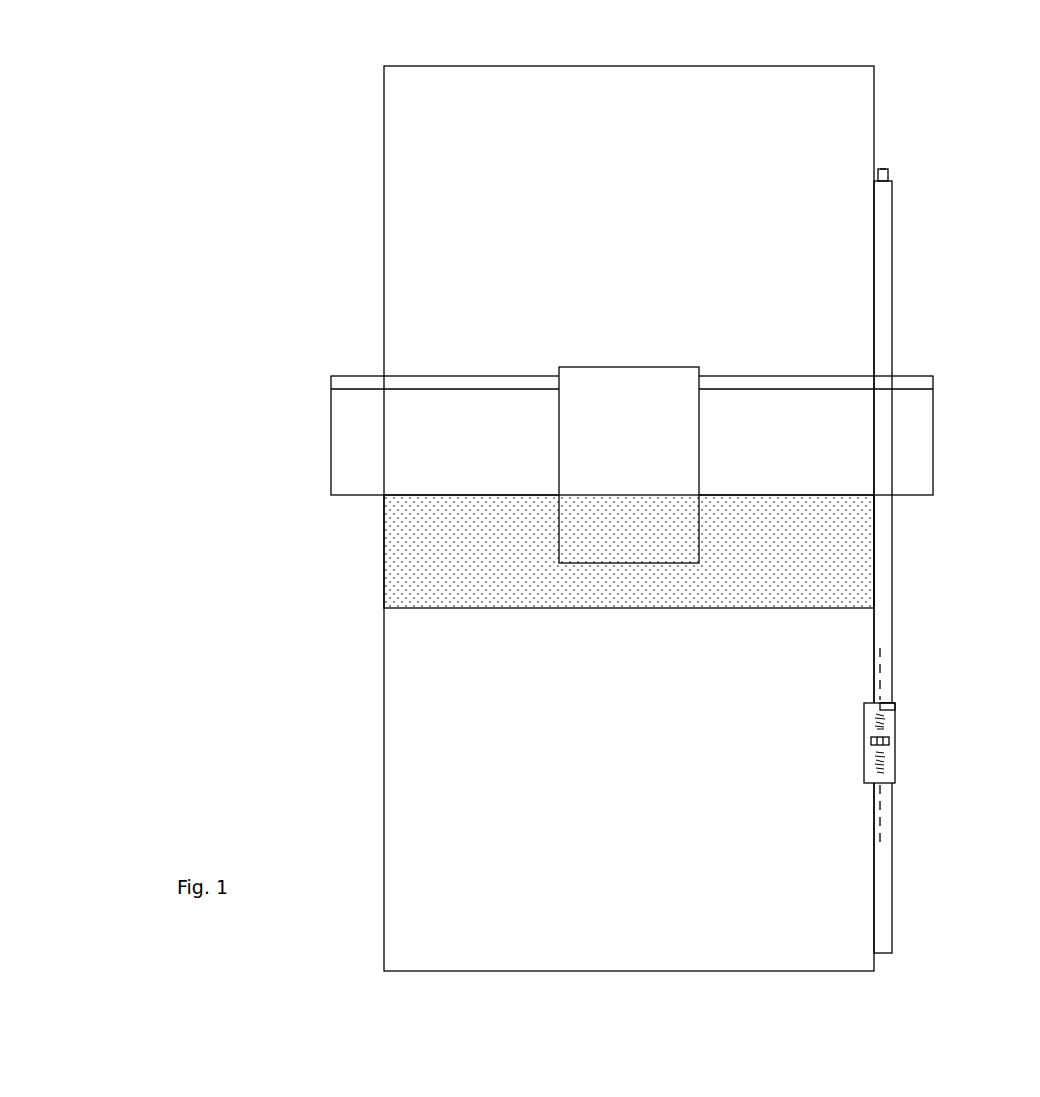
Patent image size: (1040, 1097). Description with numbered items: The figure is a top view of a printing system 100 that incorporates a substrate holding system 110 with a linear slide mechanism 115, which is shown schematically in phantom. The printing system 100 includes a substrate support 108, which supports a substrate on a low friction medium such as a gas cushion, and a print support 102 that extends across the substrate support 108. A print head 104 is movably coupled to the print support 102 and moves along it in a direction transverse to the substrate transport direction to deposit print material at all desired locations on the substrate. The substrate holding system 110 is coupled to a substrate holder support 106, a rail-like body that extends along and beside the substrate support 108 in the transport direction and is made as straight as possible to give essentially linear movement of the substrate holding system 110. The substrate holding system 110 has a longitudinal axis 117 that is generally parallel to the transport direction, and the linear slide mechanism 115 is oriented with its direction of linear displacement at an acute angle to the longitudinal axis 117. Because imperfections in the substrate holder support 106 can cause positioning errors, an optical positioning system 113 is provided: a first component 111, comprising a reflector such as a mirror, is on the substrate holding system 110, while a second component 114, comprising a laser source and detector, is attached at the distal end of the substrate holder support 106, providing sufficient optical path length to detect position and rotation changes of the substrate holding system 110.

The printing system 100 is at (328, 114).
The print support 102 is at (934, 463).
The print head 104 is at (630, 366).
The substrate holder support 106 is at (893, 636).
The substrate support 108 is at (850, 563).
The substrate holding system 110 is at (896, 733).
The first component 111 is at (895, 705).
The optical positioning system 113 is at (890, 165).
The second component 114 is at (889, 175).
The linear slide mechanism 115 is at (880, 765).
The longitudinal axis 117 is at (879, 675).